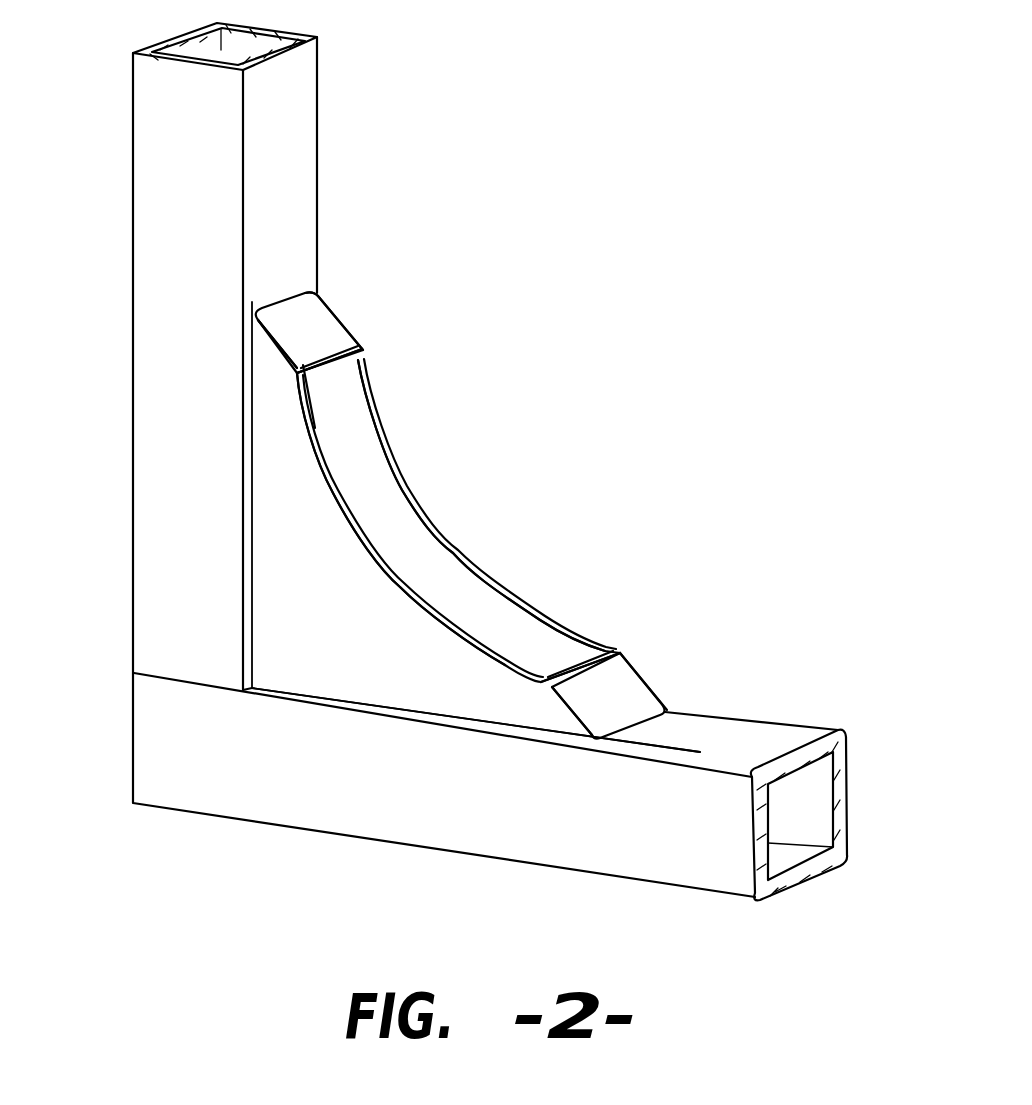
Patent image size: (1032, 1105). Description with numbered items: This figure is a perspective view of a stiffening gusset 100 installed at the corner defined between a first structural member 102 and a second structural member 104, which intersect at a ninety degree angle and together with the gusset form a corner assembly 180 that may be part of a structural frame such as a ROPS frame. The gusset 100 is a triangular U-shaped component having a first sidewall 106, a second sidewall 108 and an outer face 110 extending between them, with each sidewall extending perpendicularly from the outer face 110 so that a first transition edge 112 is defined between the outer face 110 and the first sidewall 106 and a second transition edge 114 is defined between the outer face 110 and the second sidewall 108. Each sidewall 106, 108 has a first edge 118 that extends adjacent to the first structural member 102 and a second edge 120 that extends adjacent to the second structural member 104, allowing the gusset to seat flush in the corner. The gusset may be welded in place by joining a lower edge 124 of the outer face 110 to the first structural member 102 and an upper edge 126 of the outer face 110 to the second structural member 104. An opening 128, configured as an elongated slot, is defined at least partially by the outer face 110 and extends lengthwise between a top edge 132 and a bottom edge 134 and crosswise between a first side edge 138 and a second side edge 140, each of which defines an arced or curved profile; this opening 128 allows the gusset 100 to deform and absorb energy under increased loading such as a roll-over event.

The stiffening gusset 100 is at (466, 515).
The first structural member 102 is at (360, 803).
The second structural member 104 is at (153, 182).
The first sidewall 106 is at (355, 672).
The second sidewall 108 is at (415, 545).
The outer face 110 is at (318, 325).
The first transition edge 112 is at (262, 352).
The second transition edge 114 is at (342, 343).
The first edge 118 is at (445, 722).
The second edge 120 is at (252, 488).
The lower edge 124 is at (675, 728).
The upper edge 126 is at (290, 296).
The opening 128 is at (372, 493).
The top edge 132 is at (335, 370).
The bottom edge 134 is at (595, 657).
The first side edge 138 is at (362, 552).
The second side edge 140 is at (495, 580).
The corner assembly 180 is at (653, 248).